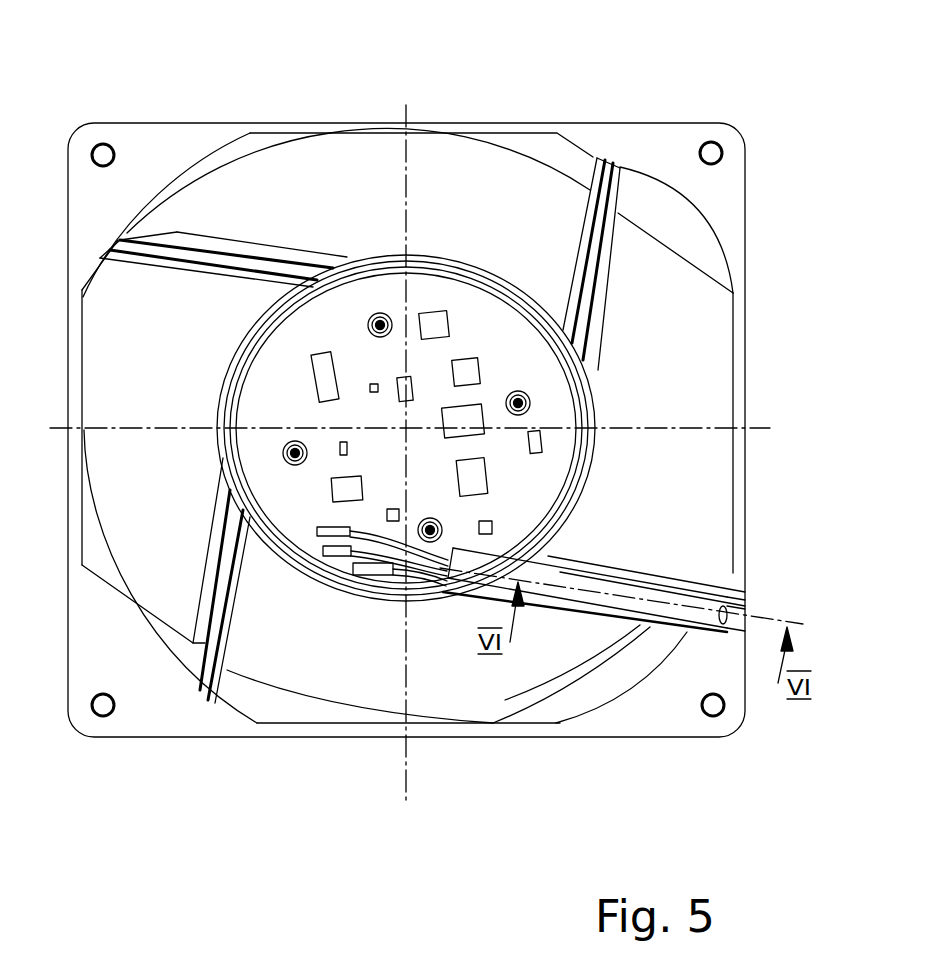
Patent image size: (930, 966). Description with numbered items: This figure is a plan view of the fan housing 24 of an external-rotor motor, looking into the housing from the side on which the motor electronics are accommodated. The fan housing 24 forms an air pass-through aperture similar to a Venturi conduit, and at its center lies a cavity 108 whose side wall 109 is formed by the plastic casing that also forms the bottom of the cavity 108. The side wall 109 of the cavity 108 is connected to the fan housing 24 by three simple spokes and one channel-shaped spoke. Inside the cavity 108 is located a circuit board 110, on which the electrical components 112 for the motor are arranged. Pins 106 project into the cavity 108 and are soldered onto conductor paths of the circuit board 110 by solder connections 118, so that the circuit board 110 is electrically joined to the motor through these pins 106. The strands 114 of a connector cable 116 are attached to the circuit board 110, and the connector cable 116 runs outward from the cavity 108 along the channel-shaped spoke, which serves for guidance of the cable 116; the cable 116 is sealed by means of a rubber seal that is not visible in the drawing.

The fan housing 24 is at (658, 143).
The pins 106 is at (368, 325).
The cavity 108 is at (288, 357).
The side wall 109 is at (593, 463).
The circuit board 110 is at (493, 339).
The electrical components 112 is at (460, 375).
The strands 114 is at (380, 600).
The connector cable 116 is at (600, 580).
The solder connections 118 is at (380, 313).